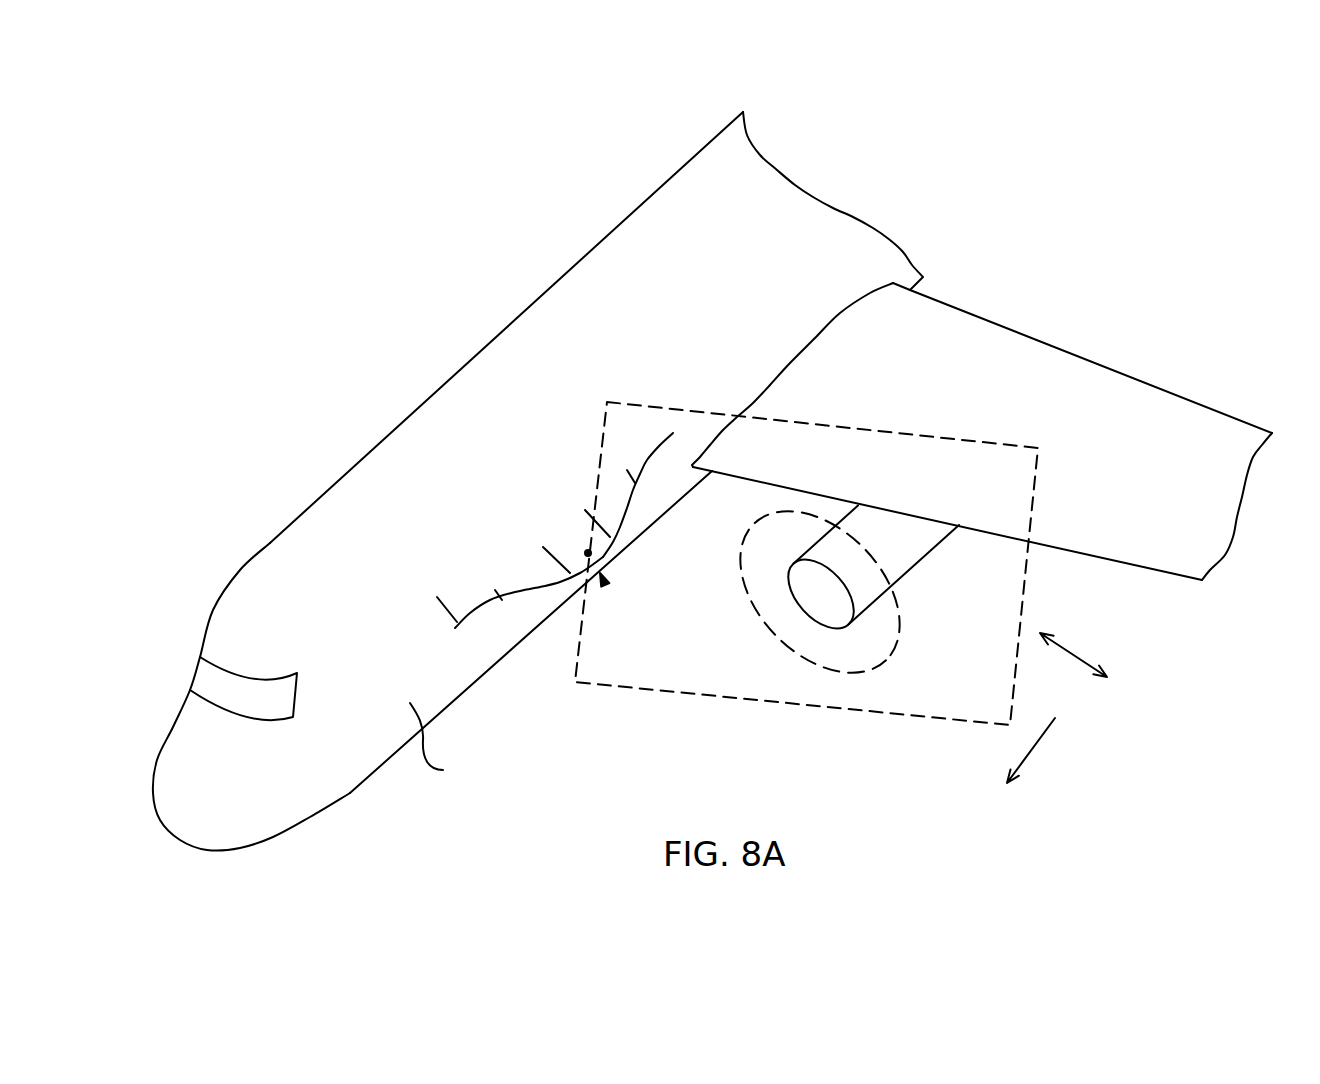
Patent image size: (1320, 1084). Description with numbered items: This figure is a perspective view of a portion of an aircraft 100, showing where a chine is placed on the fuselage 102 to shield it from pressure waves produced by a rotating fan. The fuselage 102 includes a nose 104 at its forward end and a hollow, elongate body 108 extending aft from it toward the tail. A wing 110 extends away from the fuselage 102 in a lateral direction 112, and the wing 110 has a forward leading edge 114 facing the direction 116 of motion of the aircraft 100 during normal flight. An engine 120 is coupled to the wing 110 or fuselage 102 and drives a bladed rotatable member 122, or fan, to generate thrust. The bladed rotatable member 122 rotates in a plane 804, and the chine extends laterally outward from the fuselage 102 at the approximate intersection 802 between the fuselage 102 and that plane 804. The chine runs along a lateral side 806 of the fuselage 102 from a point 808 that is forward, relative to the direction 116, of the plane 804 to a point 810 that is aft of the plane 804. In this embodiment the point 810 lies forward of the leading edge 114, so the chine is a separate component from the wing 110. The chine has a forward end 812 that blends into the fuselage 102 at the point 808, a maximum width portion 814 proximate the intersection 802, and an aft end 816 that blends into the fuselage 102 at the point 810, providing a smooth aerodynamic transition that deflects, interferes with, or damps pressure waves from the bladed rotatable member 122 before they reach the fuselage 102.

The aircraft 100 is at (367, 252).
The fuselage 102 is at (621, 347).
The nose 104 is at (337, 767).
The hollow, elongate body 108 is at (348, 518).
The wing 110 is at (1077, 373).
The lateral direction 112 is at (1073, 652).
The forward leading edge 114 is at (972, 528).
The direction of motion 116 is at (1040, 740).
The engine 120 is at (893, 552).
The bladed rotatable member 122 is at (790, 637).
The intersection 802 is at (588, 553).
The plane of rotation 804 is at (767, 700).
The lateral side 806 is at (444, 744).
The point 808 is at (460, 627).
The point 810 is at (673, 433).
The forward end 812 is at (485, 640).
The maximum width portion 814 is at (600, 573).
The aft end 816 is at (622, 447).